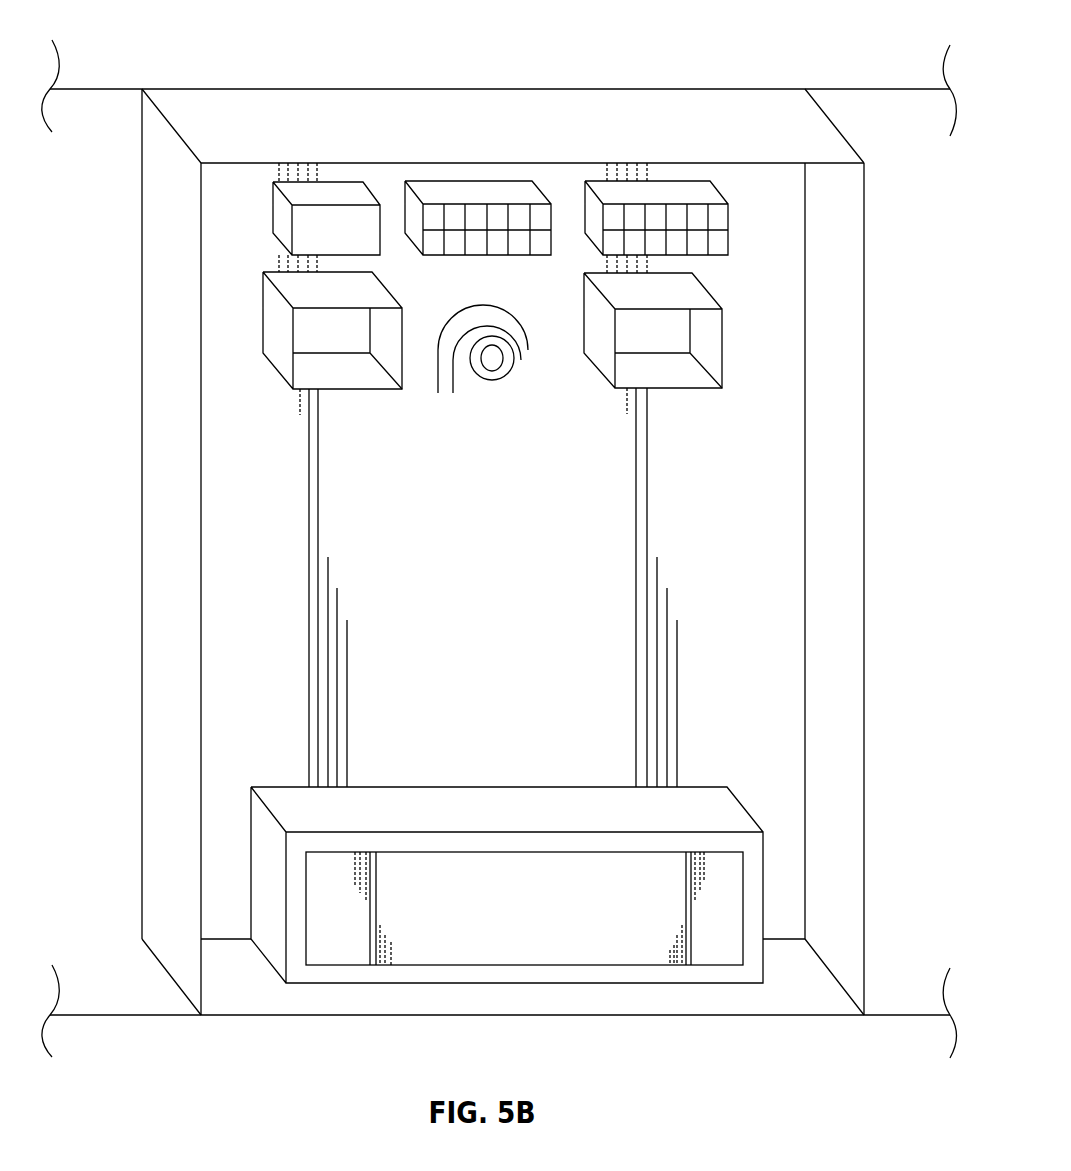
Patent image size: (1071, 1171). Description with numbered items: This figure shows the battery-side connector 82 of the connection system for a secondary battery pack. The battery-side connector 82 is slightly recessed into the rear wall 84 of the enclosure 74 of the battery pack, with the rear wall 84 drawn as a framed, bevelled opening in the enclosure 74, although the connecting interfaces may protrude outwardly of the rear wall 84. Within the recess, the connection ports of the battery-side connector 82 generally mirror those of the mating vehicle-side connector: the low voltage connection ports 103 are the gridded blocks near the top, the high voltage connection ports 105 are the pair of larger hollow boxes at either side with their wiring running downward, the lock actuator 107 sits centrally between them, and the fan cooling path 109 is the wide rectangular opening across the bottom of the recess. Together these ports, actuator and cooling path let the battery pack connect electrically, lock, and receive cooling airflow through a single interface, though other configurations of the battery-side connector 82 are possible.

The enclosure 74 is at (867, 87).
The battery-side connector 82 is at (627, 89).
The rear wall 84 is at (844, 112).
The low voltage connection ports 103 is at (469, 182).
The high voltage connection ports 105 is at (347, 390).
The lock actuator 107 is at (495, 378).
The fan cooling path 109 is at (491, 940).